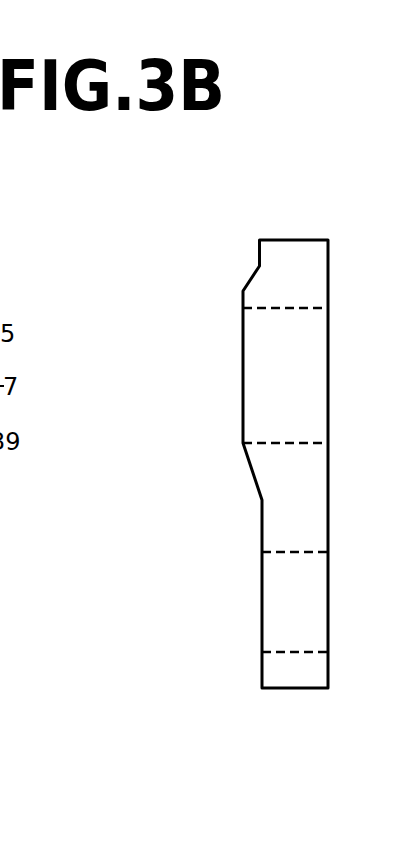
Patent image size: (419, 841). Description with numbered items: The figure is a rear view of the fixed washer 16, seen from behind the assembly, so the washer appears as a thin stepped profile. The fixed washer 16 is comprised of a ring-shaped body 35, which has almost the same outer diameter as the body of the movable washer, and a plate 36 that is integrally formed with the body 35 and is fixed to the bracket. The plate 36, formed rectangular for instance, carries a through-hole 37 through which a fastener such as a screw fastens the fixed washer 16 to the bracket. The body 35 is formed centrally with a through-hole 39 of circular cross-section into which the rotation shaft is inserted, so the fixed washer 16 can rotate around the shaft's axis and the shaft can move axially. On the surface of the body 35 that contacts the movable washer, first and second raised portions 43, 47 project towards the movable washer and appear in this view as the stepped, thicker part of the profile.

The fixed washer 16 is at (303, 132).
The body 35 is at (329, 277).
The plate 36 is at (329, 523).
The through-hole 37 is at (294, 652).
The through-hole 39 is at (294, 443).
The first raised portion 43 is at (226, 464).
The second raised portion 47 is at (243, 383).